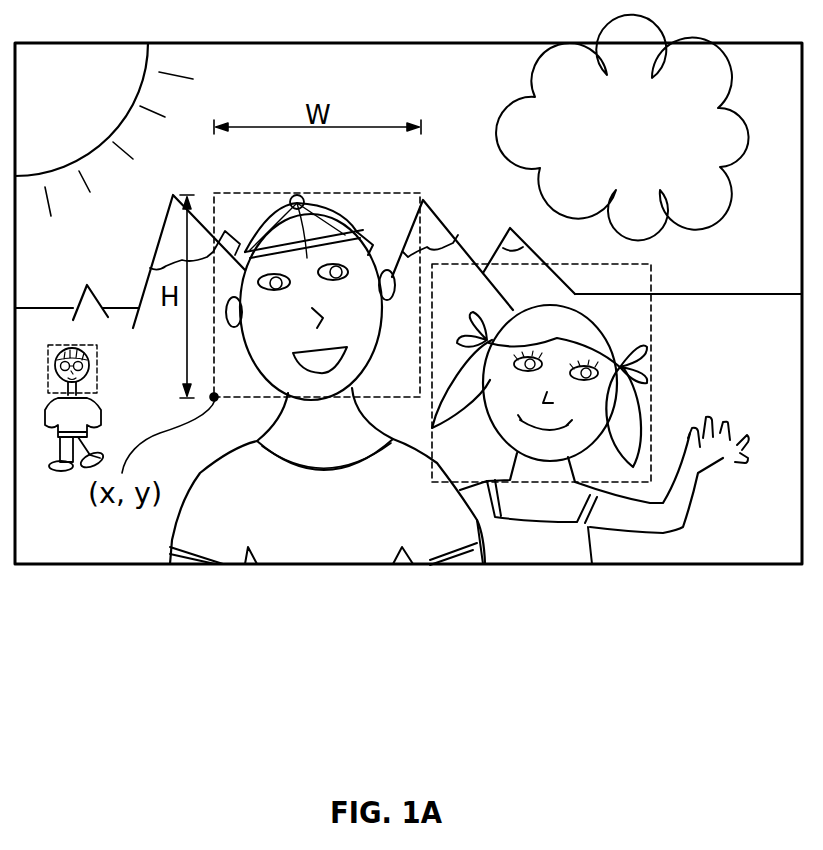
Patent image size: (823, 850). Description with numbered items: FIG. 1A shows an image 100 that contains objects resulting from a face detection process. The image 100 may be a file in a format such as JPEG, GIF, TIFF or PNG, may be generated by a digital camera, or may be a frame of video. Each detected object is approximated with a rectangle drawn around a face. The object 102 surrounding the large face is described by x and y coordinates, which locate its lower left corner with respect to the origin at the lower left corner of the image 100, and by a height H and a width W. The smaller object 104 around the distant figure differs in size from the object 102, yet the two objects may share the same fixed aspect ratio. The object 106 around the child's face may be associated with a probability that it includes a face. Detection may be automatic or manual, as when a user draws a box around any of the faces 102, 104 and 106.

The image 100 is at (408, 43).
The object 102 is at (341, 192).
The object 104 is at (98, 370).
The object 106 is at (578, 264).